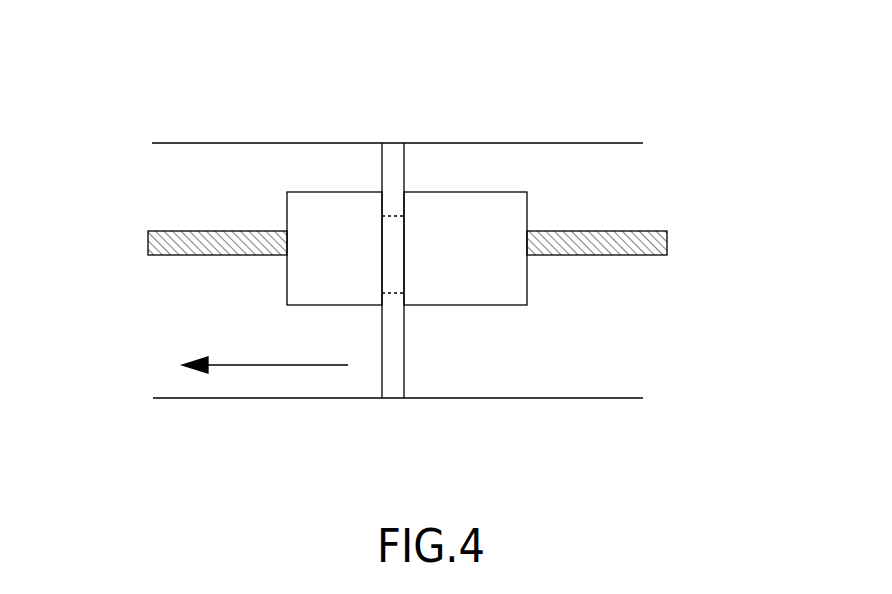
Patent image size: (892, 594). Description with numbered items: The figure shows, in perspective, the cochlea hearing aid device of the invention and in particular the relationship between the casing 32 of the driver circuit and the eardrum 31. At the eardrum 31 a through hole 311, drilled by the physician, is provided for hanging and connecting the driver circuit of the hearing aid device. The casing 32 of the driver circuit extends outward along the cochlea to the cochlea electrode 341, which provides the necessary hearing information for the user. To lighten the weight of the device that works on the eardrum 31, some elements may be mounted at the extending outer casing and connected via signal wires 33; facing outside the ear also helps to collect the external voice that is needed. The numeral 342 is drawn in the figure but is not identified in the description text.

The eardrum 31 is at (399, 165).
The through hole 311 is at (390, 252).
The casing 32 is at (473, 243).
The signal wires 33 is at (177, 230).
The cochlea electrode 341 is at (620, 255).
The flow channel 342 is at (293, 365).